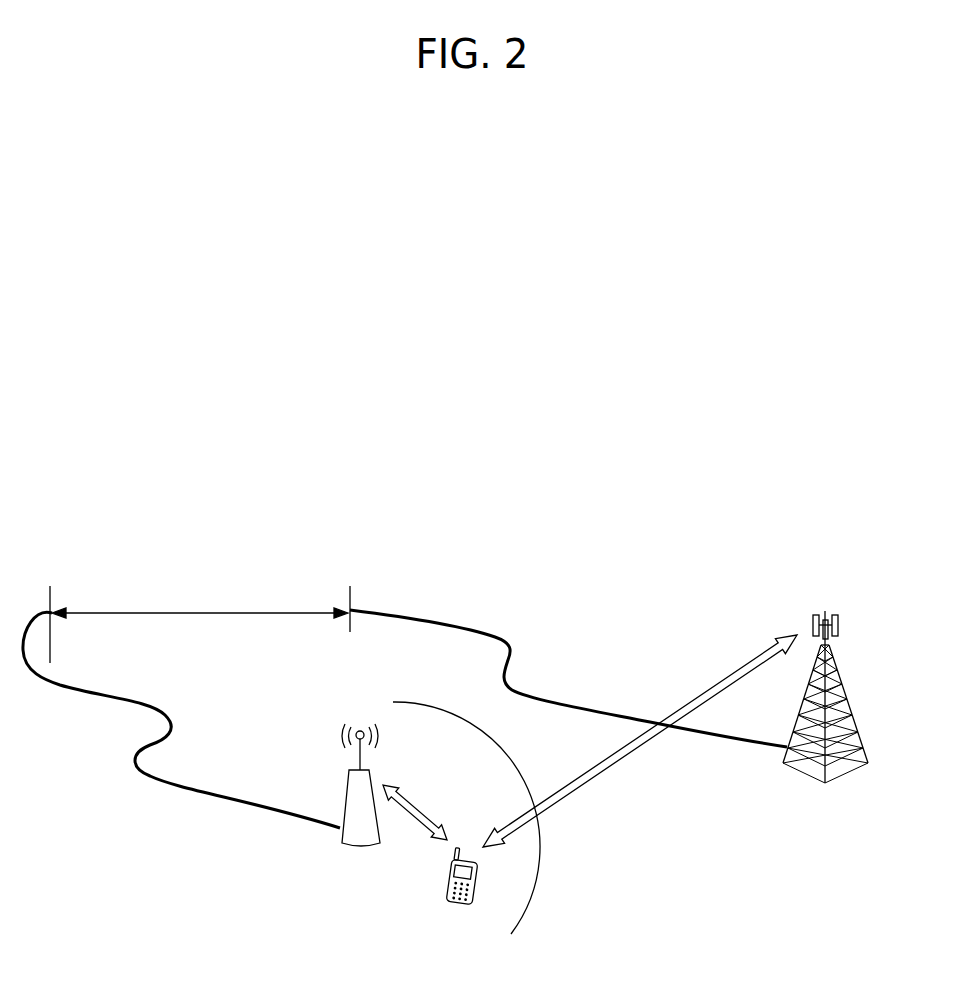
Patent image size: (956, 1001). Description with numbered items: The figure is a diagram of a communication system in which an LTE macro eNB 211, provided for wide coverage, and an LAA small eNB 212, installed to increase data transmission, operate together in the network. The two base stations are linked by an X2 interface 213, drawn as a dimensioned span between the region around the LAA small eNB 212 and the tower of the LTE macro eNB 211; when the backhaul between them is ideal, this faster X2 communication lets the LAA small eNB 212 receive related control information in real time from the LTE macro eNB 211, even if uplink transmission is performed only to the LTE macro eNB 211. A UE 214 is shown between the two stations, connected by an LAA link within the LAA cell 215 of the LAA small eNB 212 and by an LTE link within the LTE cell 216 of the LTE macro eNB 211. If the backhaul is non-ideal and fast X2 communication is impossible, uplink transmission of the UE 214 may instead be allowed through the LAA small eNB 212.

The LTE macro eNB 211 is at (825, 612).
The LAA small eNB 212 is at (343, 843).
The X2 interface 213 is at (187, 573).
The UE 214 is at (457, 903).
The LAA cell 215 is at (432, 780).
The LTE cell 216 is at (650, 787).